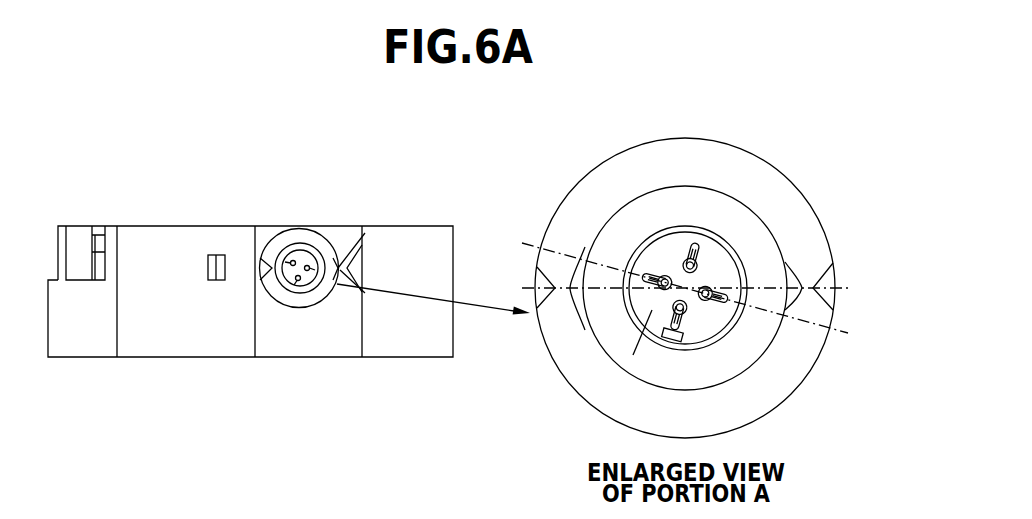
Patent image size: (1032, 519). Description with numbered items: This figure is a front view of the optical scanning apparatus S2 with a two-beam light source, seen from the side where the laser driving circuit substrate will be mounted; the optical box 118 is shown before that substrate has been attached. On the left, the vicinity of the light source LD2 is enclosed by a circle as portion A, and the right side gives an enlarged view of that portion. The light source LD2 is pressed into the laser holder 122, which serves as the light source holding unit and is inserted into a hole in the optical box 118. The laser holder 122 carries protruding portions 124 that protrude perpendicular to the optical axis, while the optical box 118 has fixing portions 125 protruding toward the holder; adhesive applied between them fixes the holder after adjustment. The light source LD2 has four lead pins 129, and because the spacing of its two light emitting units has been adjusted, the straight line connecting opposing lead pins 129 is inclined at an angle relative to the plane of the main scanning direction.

The optical scanning apparatus S2 is at (199, 189).
The optical box 118 is at (188, 343).
The laser holder 122 is at (718, 200).
The protruding portions 124 is at (793, 258).
The fixing portions 125 is at (268, 264).
The lead pins 129 is at (692, 243).
The light source LD2 is at (652, 310).